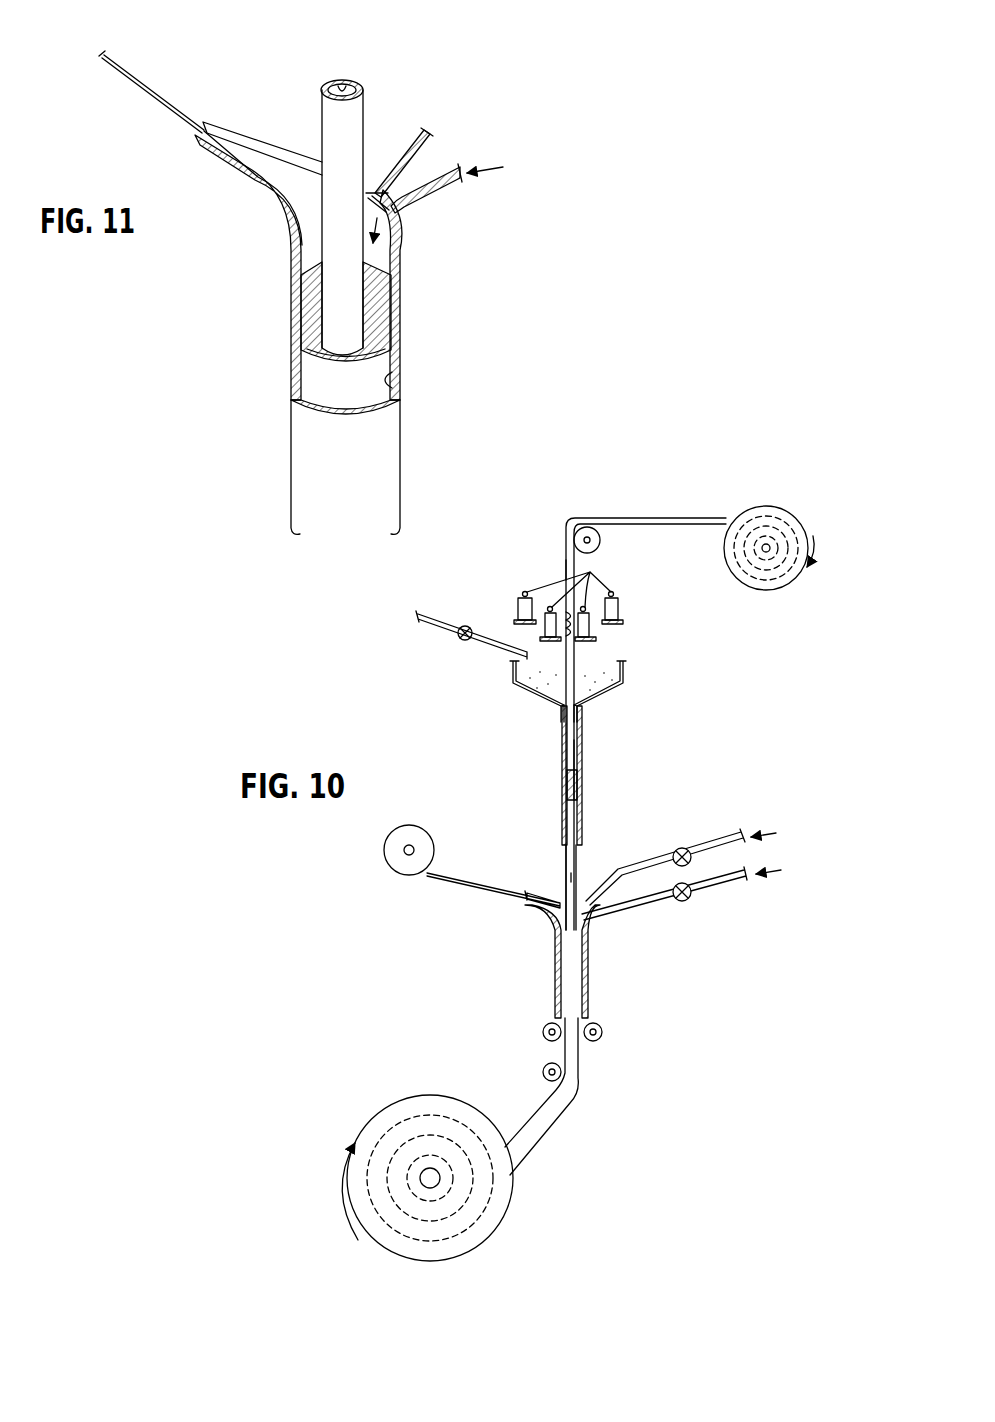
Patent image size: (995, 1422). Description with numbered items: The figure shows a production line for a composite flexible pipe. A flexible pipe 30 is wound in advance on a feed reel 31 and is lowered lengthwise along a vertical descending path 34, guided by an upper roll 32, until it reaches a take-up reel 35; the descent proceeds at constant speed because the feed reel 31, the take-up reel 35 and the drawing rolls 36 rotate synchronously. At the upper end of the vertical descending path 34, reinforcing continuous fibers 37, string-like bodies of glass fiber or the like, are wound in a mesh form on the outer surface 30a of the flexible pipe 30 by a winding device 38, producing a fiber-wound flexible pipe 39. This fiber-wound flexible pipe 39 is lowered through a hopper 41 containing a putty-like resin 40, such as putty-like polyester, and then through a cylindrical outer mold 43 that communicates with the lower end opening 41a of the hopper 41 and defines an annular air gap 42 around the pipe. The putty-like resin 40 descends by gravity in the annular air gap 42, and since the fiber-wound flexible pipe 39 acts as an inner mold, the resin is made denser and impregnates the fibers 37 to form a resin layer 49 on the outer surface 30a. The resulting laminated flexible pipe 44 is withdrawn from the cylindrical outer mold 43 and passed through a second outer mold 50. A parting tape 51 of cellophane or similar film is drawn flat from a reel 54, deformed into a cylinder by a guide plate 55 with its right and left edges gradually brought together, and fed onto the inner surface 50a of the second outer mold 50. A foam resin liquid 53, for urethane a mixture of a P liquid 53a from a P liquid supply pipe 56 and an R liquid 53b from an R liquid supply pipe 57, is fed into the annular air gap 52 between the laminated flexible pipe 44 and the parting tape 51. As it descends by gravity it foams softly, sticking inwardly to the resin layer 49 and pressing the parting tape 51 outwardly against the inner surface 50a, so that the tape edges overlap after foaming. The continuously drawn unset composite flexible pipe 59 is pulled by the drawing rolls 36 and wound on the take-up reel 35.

In FIG. 11, the flexible pipe 30 is at (345, 86).
In FIG. 10, the flexible pipe 30 is at (658, 511).
In FIG. 10, the outer surface of the flexible pipe 30a is at (566, 568).
In FIG. 10, the feed reel 31 is at (793, 574).
In FIG. 10, the upper roll 32 is at (600, 547).
In FIG. 10, the vertical descending path 34 is at (578, 752).
In FIG. 10, the take-up reel 35 is at (485, 1228).
In FIG. 10, the drawing rolls 36 is at (542, 1027).
In FIG. 10, the reinforcing continuous fibers 37 is at (658, 645).
In FIG. 10, the winding device 38 is at (509, 605).
In FIG. 10, the fiber-wound flexible pipe 39 is at (559, 654).
In FIG. 10, the putty-like resin 40 is at (533, 690).
In FIG. 10, the hopper 41 is at (624, 680).
In FIG. 10, the lower end opening 41a is at (585, 695).
In FIG. 10, the annular air gap 42 is at (584, 800).
In FIG. 10, the cylindrical outer mold 43 is at (562, 823).
In FIG. 11, the laminated flexible pipe 44 is at (326, 121).
In FIG. 10, the laminated flexible pipe 44 is at (585, 866).
In FIG. 11, the resin layer 49 is at (330, 86).
In FIG. 11, the second outer mold 50 is at (373, 313).
In FIG. 10, the second outer mold 50 is at (555, 992).
In FIG. 11, the inner surface of the second outer mold 50a is at (394, 383).
In FIG. 11, the parting tape 51 is at (138, 88).
In FIG. 10, the parting tape 51 is at (468, 893).
In FIG. 11, the annular air gap 52 is at (377, 263).
In FIG. 11, the foam resin liquid 53 is at (480, 83).
In FIG. 10, the foam resin liquid 53 is at (795, 822).
In FIG. 11, the P liquid 53a is at (443, 127).
In FIG. 10, the P liquid 53a is at (768, 832).
In FIG. 11, the R liquid 53b is at (495, 170).
In FIG. 10, the R liquid 53b is at (770, 874).
In FIG. 10, the reel 54 is at (405, 869).
In FIG. 11, the guide plate 55 is at (227, 158).
In FIG. 11, the P liquid supply pipe 56 is at (415, 147).
In FIG. 11, the R liquid supply pipe 57 is at (450, 190).
In FIG. 10, the unset composite flexible pipe 59 is at (557, 1112).